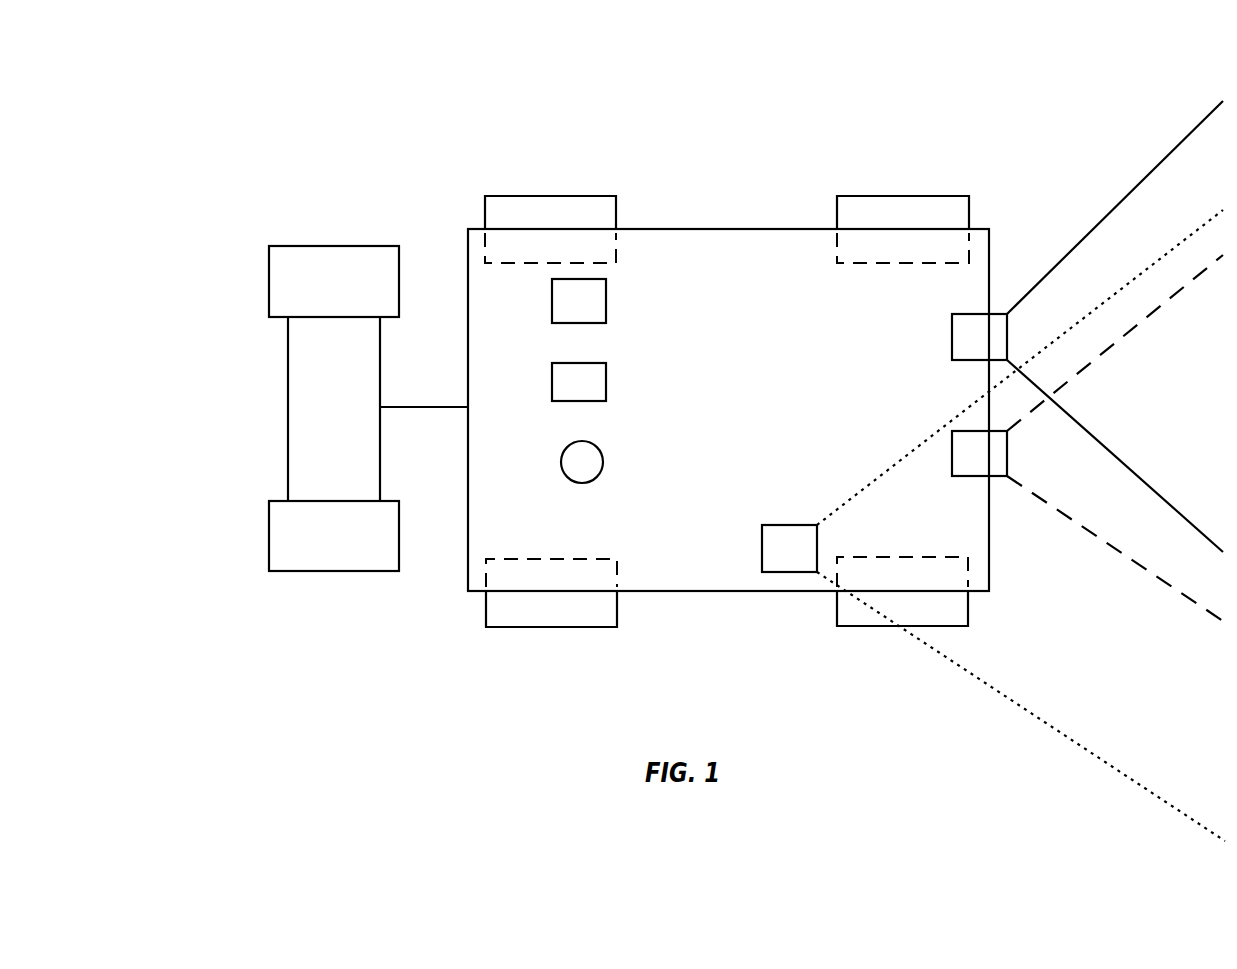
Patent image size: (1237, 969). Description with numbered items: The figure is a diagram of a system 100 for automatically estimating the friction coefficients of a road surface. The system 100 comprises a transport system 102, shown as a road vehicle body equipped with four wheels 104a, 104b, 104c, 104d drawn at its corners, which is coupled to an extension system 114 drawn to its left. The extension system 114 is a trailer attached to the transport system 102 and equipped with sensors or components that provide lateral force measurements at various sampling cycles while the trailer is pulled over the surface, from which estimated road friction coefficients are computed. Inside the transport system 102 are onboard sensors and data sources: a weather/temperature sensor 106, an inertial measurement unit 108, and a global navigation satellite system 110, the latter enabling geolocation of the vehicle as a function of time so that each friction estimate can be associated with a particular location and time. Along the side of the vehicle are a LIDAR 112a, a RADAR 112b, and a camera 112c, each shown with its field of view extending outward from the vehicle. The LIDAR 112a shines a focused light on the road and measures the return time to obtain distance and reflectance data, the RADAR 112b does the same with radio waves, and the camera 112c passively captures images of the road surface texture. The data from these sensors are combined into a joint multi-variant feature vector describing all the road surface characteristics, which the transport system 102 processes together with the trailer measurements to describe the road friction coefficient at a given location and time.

The system 100 is at (250, 120).
The transport system 102 is at (723, 202).
The wheel 104a is at (886, 196).
The wheel 104b is at (854, 626).
The wheel 104c is at (573, 196).
The wheel 104d is at (540, 627).
The weather/temperature sensor 106 is at (606, 322).
The inertial measurement unit 108 is at (606, 400).
The global navigation satellite system 110 is at (602, 470).
The LIDAR 112a is at (952, 357).
The RADAR 112b is at (1007, 472).
The camera 112c is at (817, 570).
The extension system 114 is at (323, 439).